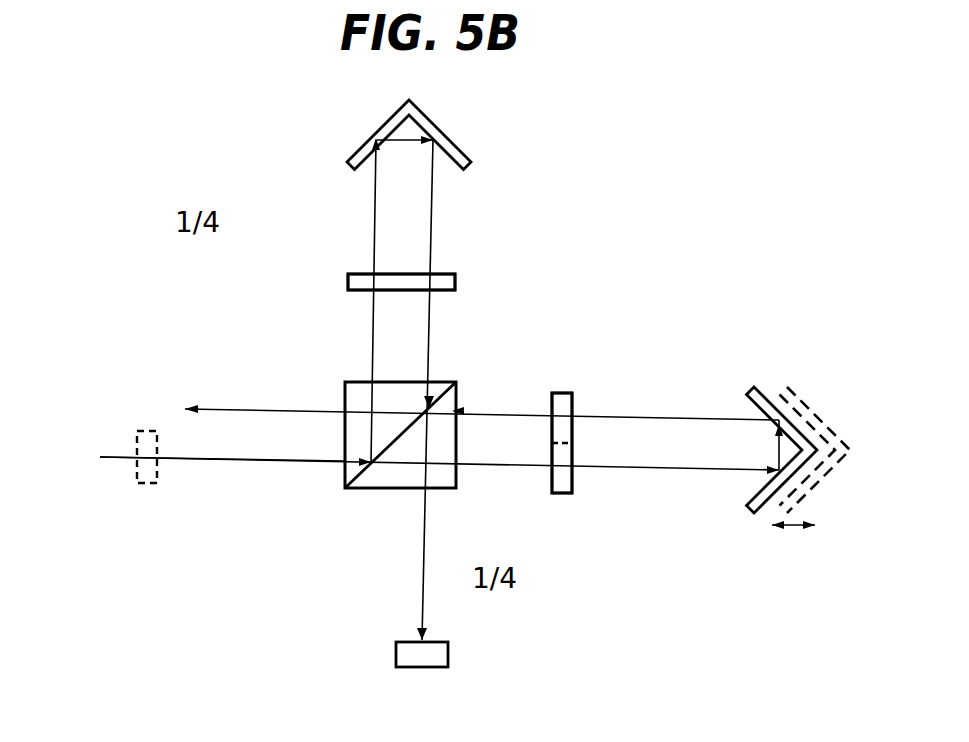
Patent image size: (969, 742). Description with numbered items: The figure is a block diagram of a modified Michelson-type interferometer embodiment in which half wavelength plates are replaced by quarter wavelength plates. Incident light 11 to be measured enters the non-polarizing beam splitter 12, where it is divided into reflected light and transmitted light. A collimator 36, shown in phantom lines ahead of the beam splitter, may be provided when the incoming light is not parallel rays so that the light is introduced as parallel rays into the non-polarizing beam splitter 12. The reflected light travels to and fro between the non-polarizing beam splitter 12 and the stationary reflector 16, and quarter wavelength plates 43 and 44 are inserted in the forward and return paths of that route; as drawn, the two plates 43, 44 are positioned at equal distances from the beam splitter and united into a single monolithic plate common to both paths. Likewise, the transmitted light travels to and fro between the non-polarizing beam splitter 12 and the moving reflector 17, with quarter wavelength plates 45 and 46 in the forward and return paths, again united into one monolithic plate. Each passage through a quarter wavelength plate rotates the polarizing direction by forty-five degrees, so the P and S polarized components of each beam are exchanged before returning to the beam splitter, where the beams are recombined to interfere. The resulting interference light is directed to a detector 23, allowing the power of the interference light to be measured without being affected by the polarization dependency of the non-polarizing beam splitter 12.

The incident light 11 is at (113, 458).
The non-polarizing beam splitter 12 is at (345, 395).
The stationary reflector 16 is at (452, 143).
The moving reflector 17 is at (757, 504).
The photodetector 23 is at (449, 655).
The collimator 36 is at (145, 483).
The ¼ wavelength plate 43 is at (350, 278).
The ¼ wavelength plate 44 is at (457, 282).
The ¼ wavelength plate 45 is at (562, 493).
The ¼ wavelength plate 46 is at (565, 393).